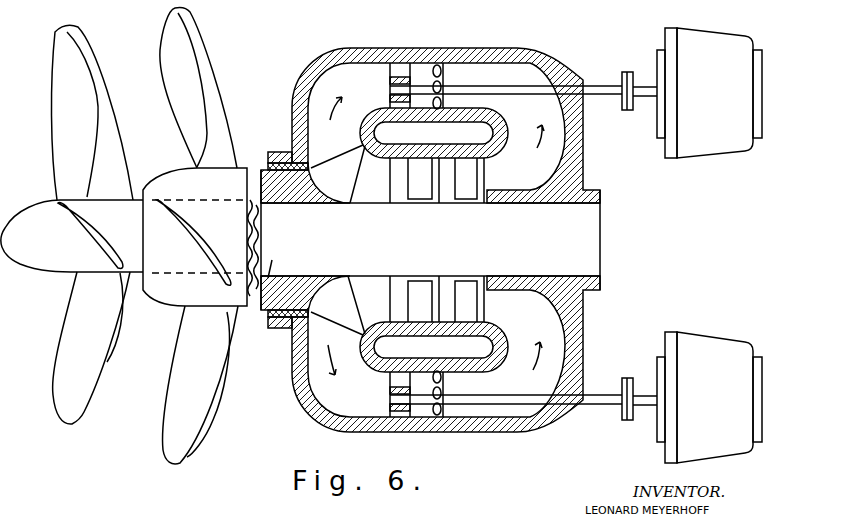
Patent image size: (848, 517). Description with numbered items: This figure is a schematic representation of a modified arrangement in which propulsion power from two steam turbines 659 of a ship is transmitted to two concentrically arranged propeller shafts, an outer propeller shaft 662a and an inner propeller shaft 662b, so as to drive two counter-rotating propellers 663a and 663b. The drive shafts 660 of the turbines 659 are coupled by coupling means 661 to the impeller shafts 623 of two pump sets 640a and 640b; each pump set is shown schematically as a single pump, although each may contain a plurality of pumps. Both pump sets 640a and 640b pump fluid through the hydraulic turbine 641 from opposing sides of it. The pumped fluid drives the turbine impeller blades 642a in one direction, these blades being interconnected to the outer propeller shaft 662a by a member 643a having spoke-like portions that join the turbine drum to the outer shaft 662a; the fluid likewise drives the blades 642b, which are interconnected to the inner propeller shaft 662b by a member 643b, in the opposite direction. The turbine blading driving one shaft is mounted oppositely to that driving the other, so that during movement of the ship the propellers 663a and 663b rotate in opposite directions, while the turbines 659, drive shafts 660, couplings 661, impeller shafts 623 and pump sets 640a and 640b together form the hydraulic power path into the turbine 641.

The impeller shaft 623 is at (603, 85).
The pump set 640a is at (427, 413).
The pump set 640b is at (426, 68).
The turbine 641 is at (502, 190).
The turbine impeller blades 642a is at (470, 277).
The turbine impeller blades 642b is at (447, 200).
The member 643a is at (382, 322).
The member 643b is at (388, 158).
The turbine 659 is at (718, 47).
The drive shaft 660 is at (644, 88).
The coupling means 661 is at (627, 111).
The outer propeller shaft 662a is at (290, 338).
The inner propeller shaft 662b is at (270, 329).
The propeller 663a is at (182, 452).
The propeller 663b is at (70, 413).